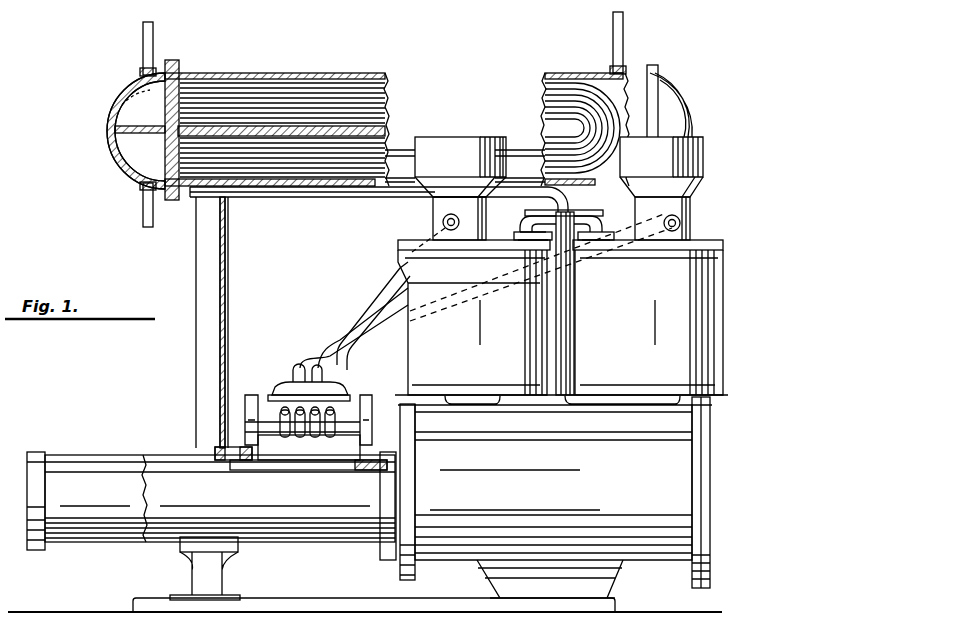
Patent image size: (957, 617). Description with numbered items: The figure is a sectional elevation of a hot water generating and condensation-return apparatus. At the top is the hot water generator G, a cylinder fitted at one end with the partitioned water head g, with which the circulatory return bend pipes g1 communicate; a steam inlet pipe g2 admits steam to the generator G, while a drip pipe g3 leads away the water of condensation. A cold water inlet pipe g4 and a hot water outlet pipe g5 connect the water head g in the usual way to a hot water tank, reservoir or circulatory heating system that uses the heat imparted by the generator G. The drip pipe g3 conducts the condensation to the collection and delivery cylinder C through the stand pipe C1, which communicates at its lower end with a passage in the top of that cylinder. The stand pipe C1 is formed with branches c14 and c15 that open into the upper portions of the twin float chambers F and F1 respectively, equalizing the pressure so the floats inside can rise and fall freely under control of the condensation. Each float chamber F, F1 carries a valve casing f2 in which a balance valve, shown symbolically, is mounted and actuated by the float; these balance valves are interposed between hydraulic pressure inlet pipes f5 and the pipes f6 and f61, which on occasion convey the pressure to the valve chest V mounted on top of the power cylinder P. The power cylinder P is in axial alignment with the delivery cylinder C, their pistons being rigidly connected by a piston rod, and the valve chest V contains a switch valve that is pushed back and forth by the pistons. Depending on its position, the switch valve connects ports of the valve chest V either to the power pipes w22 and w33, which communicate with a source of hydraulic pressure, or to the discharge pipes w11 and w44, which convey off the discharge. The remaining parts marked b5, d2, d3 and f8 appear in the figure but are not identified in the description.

The hot water generator G is at (428, 116).
The partitioned water head g is at (133, 130).
The circulatory return bend pipes g1 is at (290, 100).
The steam inlet pipe g2 is at (623, 33).
The drip pipe g3 is at (302, 196).
The cold water inlet pipe g4 is at (140, 218).
The hot water outlet pipe g5 is at (142, 38).
The valve casing f2 is at (559, 188).
The hydraulic pressure inlet pipes f5 is at (442, 222).
The float chamber F is at (474, 311).
The float chamber F1 is at (648, 317).
The stand pipe C1 is at (560, 322).
The branch of the stand pipe c14 is at (532, 220).
The branch of the stand pipe c15 is at (594, 217).
The collection and delivery cylinder C is at (555, 497).
The power cylinder P is at (310, 497).
The valve chest V is at (298, 446).
The pipe fitting b5 is at (240, 455).
The manifold d2 is at (299, 366).
The pipe d3 is at (318, 366).
The pipe f6 is at (301, 366).
The pipe f61 is at (392, 290).
The link f8 is at (396, 322).
The discharge pipe w11 is at (284, 410).
The power pipe w22 is at (299, 410).
The power pipe w33 is at (318, 410).
The discharge pipe w44 is at (333, 410).